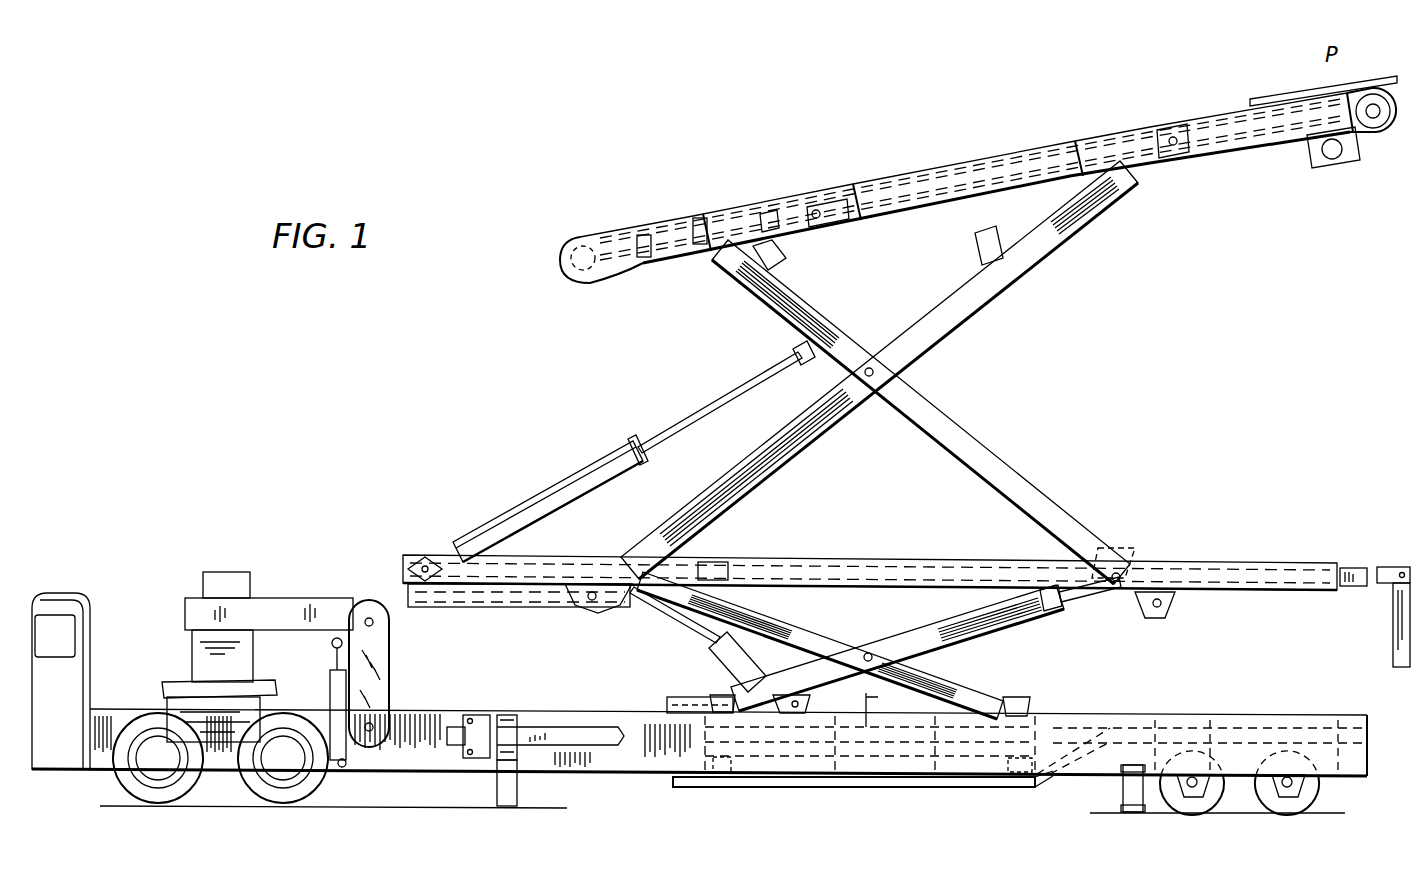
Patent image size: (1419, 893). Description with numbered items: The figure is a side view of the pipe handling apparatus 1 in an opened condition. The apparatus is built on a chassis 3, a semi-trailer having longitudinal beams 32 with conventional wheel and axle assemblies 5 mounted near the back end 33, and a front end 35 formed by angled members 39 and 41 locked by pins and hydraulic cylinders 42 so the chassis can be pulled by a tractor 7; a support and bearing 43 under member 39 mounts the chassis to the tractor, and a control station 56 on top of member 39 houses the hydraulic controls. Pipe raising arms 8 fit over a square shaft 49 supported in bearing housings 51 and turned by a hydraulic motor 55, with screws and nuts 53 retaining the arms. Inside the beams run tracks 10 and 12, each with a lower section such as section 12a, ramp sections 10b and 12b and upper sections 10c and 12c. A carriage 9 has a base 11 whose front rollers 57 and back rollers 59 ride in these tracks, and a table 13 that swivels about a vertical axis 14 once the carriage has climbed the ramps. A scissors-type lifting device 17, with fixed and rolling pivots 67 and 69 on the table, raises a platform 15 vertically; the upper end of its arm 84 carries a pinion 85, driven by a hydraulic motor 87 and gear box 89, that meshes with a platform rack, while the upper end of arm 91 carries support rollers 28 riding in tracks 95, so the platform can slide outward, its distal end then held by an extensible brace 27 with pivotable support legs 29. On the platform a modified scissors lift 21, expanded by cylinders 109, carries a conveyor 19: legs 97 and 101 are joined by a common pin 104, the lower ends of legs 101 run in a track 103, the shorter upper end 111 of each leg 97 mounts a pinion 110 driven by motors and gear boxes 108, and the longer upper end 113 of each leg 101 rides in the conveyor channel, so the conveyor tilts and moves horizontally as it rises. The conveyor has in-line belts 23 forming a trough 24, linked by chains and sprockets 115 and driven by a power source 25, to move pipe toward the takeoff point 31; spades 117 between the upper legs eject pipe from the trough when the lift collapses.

The pipe handling apparatus 1 is at (530, 343).
The chassis 3 is at (410, 780).
The wheel and axle assemblies 5 is at (1325, 785).
The tractor 7 is at (64, 592).
The pipe raising arms 8 is at (518, 787).
The carriage 9 is at (912, 755).
The track 10 is at (1253, 735).
The ramp section 10b is at (1110, 730).
The upper horizontal section 10c is at (1210, 732).
The base 11 is at (926, 765).
The track 12 is at (1302, 726).
The lower horizontal section 12a is at (672, 770).
The ramp section 12b is at (780, 775).
The upper horizontal section 12c is at (1268, 715).
The table 13 is at (925, 713).
The vertical axis 14 is at (886, 707).
The platform 15 is at (1303, 560).
The scissors-type lifting device 17 is at (980, 605).
The conveyor 19 is at (1112, 130).
The modified scissors lift 21 is at (1042, 268).
The in-line belts 23 is at (606, 238).
The trough 24 is at (1005, 162).
The power source 25 is at (1333, 168).
The horizontally extensible brace 27 is at (1393, 568).
The support rollers 28 is at (630, 565).
The support legs 29 is at (1388, 622).
The conveyor takeoff point 31 is at (1385, 130).
The longitudinal beams 32 is at (650, 705).
The back end 33 is at (1362, 758).
The front end 35 is at (184, 584).
The angled member 39 is at (336, 606).
The angled member 41 is at (362, 660).
The hydraulic cylinders 42 is at (330, 688).
The support and bearing 43 is at (190, 644).
The square shaft 49 is at (592, 730).
The bearing housings 51 is at (470, 715).
The screws and nuts 53 is at (510, 716).
The hydraulic motor 55 is at (455, 745).
The control station 56 is at (238, 582).
The front rollers 57 is at (713, 775).
The back rollers 59 is at (1022, 770).
The fixed pivot point 67 is at (1012, 700).
The rolling pivot point 69 is at (725, 648).
The scissors lift arm 84 is at (905, 642).
The pinion 85 is at (1122, 560).
The hydraulic motor 87 is at (1047, 608).
The gear box 89 is at (1070, 598).
The scissors lift arm 91 is at (822, 632).
The tracks 95 is at (518, 566).
The legs 97 is at (962, 450).
The legs 101 is at (752, 480).
The track 103 is at (470, 608).
The common pin 104 is at (869, 366).
The motors and gear boxes 108 is at (670, 258).
The cylinders 109 is at (595, 470).
The pinion 110 is at (708, 238).
The upper end 111 is at (735, 280).
The upper end 113 is at (1090, 200).
The chains and sprockets 115 is at (795, 207).
The spades 117 is at (786, 258).